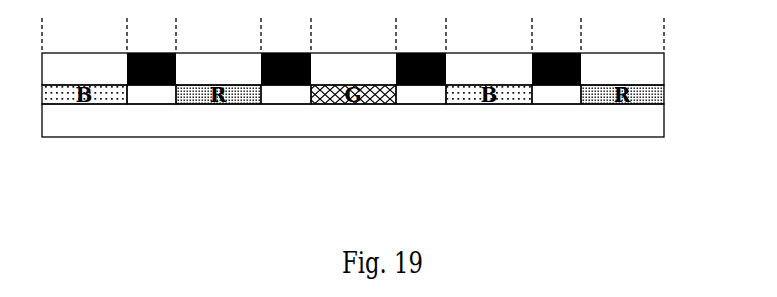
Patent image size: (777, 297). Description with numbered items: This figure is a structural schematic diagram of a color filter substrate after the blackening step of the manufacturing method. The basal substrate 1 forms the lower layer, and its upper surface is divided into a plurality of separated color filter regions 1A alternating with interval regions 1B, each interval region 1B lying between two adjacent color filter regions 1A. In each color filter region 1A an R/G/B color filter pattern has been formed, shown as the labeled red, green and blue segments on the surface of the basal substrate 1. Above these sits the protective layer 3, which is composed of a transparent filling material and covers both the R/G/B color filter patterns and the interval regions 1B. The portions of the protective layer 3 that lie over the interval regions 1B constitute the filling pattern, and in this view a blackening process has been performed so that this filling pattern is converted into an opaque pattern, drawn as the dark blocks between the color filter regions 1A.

The basal substrate 1 is at (630, 121).
The protective layer 3 is at (630, 69).
The color filter region 1A is at (49, 36).
The interval region 1B is at (574, 36).